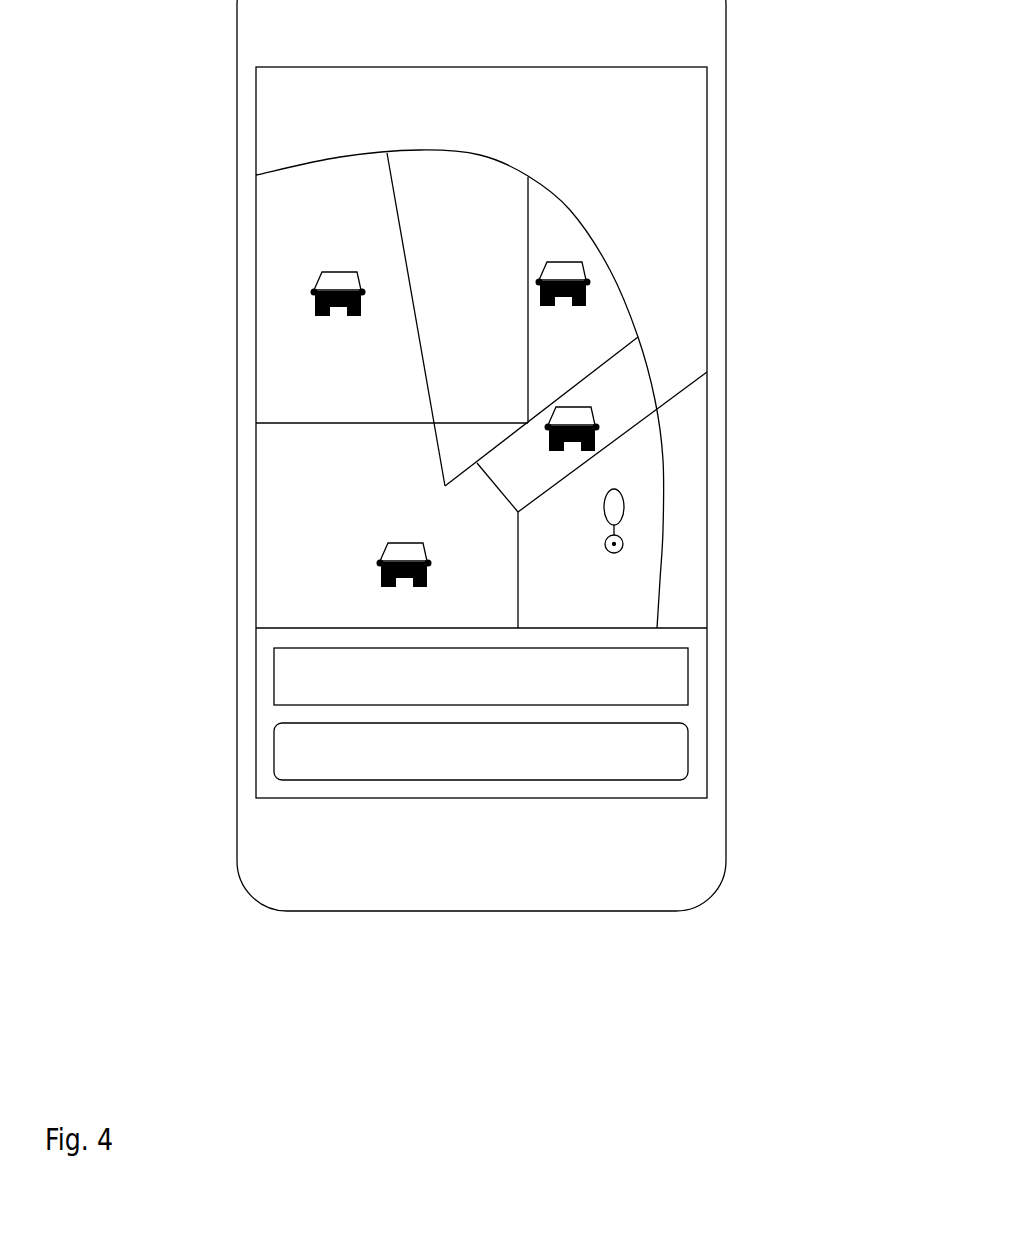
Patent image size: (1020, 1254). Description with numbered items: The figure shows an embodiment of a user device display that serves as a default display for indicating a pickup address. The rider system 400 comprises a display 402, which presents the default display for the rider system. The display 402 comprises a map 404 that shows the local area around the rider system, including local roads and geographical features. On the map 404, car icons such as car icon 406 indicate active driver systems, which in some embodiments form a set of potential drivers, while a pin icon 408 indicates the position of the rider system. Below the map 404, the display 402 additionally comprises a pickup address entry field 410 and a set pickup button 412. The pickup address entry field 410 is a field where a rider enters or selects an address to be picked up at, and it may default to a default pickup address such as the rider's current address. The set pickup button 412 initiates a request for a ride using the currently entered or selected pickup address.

The rider system 400 is at (238, 432).
The display 402 is at (256, 282).
The map 404 is at (657, 233).
The car icon 406 is at (383, 535).
The pin icon 408 is at (592, 535).
The pickup address entry field 410 is at (690, 680).
The set pickup button 412 is at (690, 755).